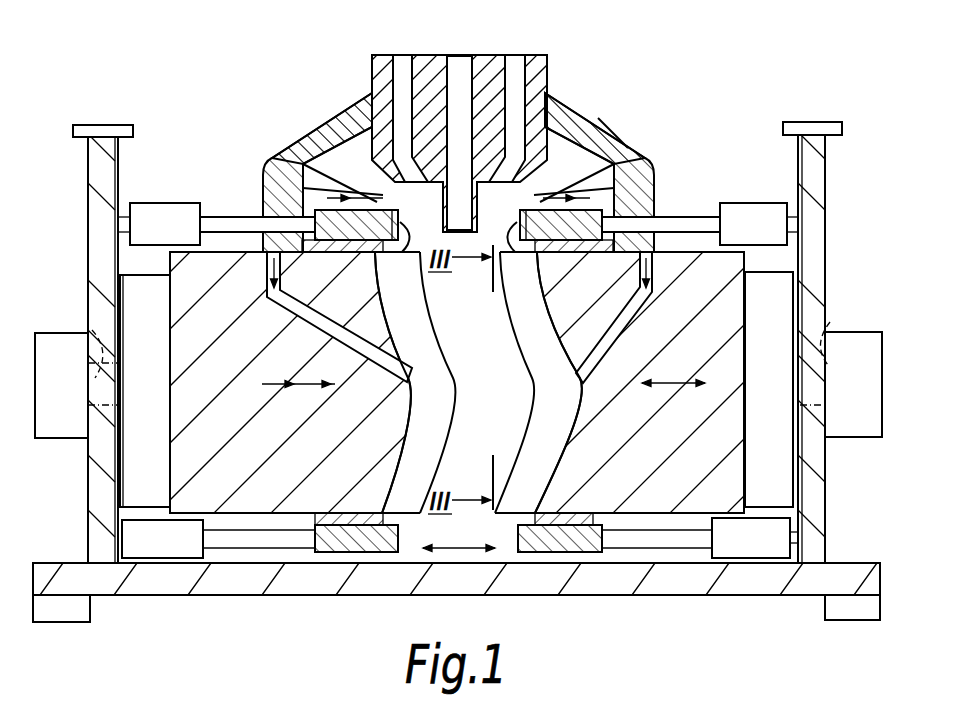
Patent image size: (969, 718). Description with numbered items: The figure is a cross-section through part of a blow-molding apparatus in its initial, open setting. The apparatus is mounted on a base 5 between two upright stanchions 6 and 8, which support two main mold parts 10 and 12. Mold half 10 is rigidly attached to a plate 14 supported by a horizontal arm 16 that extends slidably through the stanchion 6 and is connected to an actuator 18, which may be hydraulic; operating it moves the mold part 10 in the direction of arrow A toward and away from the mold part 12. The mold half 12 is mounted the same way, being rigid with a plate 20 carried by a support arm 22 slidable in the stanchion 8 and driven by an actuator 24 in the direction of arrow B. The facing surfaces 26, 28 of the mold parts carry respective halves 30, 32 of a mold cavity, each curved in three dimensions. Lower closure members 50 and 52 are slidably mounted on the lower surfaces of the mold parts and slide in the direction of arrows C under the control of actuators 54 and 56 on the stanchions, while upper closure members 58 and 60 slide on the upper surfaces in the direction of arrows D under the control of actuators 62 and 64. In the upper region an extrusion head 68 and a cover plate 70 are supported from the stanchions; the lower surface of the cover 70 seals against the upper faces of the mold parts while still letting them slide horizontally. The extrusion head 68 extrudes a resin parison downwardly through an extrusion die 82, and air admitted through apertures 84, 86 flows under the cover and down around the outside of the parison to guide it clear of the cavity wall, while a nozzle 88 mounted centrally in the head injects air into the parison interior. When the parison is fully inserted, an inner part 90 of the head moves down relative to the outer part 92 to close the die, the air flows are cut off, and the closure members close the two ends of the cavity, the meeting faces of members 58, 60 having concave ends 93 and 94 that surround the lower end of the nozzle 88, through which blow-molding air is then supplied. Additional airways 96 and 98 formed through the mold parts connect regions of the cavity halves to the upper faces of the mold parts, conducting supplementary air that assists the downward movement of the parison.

The base 5 is at (63, 580).
The upright stanchion 6 is at (88, 490).
The upright stanchion 8 is at (828, 462).
The main mold part 10 is at (190, 453).
The main mold part 12 is at (720, 484).
The plate 14 is at (140, 298).
The horizontal arm 16 is at (92, 330).
The actuator 18 is at (66, 438).
The plate 20 is at (780, 290).
The support arm 22 is at (830, 322).
The actuator 24 is at (862, 413).
The facing surface 26 is at (448, 427).
The facing surface 28 is at (533, 375).
The mold cavity half 30 is at (440, 369).
The mold cavity half 32 is at (537, 426).
The lower closure member 50 is at (362, 540).
The lower closure member 52 is at (555, 540).
The actuator 54 is at (172, 540).
The actuator 56 is at (758, 540).
The upper closure member 58 is at (327, 157).
The upper closure member 60 is at (654, 190).
The actuator 62 is at (170, 210).
The actuator 64 is at (755, 205).
The extrusion head 68 is at (457, 126).
The cover plate 70 is at (565, 112).
The extrusion die 82 is at (403, 62).
The aperture 84 is at (333, 120).
The aperture 86 is at (606, 128).
The nozzle 88 is at (463, 63).
The inner part of extrusion head 90 is at (493, 60).
The outer part of extrusion head 92 is at (541, 68).
The concave end 93 is at (357, 251).
The concave end 94 is at (557, 251).
The airway 96 is at (287, 310).
The airway 98 is at (658, 297).
The arrow A is at (300, 384).
The arrow B is at (675, 383).
The arrows C is at (460, 548).
The arrows D is at (268, 172).